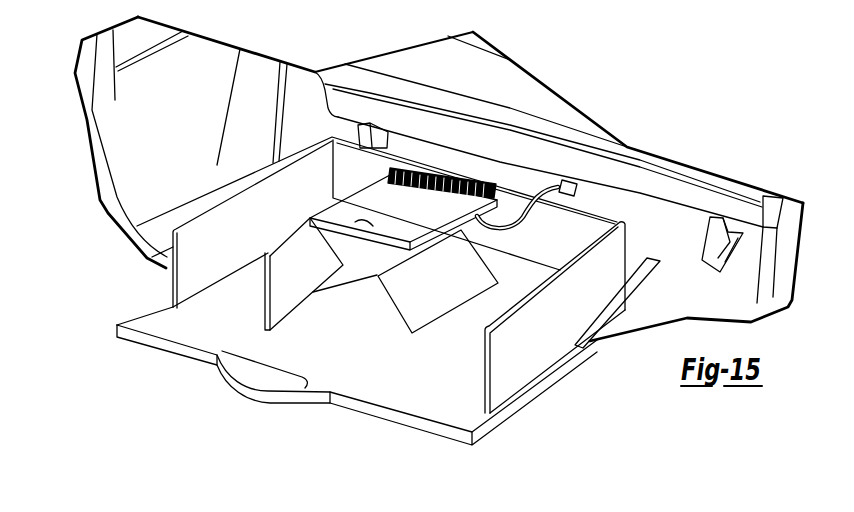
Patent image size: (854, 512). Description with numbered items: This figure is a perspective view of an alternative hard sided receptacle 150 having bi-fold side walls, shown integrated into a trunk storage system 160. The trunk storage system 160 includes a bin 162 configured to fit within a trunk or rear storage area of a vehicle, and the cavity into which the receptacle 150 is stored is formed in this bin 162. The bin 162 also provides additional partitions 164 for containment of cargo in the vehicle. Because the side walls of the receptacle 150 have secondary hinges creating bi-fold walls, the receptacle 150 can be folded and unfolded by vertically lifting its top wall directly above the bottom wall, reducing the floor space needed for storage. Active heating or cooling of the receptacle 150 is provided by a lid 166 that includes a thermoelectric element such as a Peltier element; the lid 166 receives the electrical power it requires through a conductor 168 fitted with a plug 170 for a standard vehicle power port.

The receptacle 150 is at (488, 263).
The trunk storage system 160 is at (140, 321).
The bin 162 is at (498, 417).
The partitions 164 is at (279, 250).
The lid 166 is at (440, 174).
The conductor 168 is at (565, 180).
The plug 170 is at (577, 182).